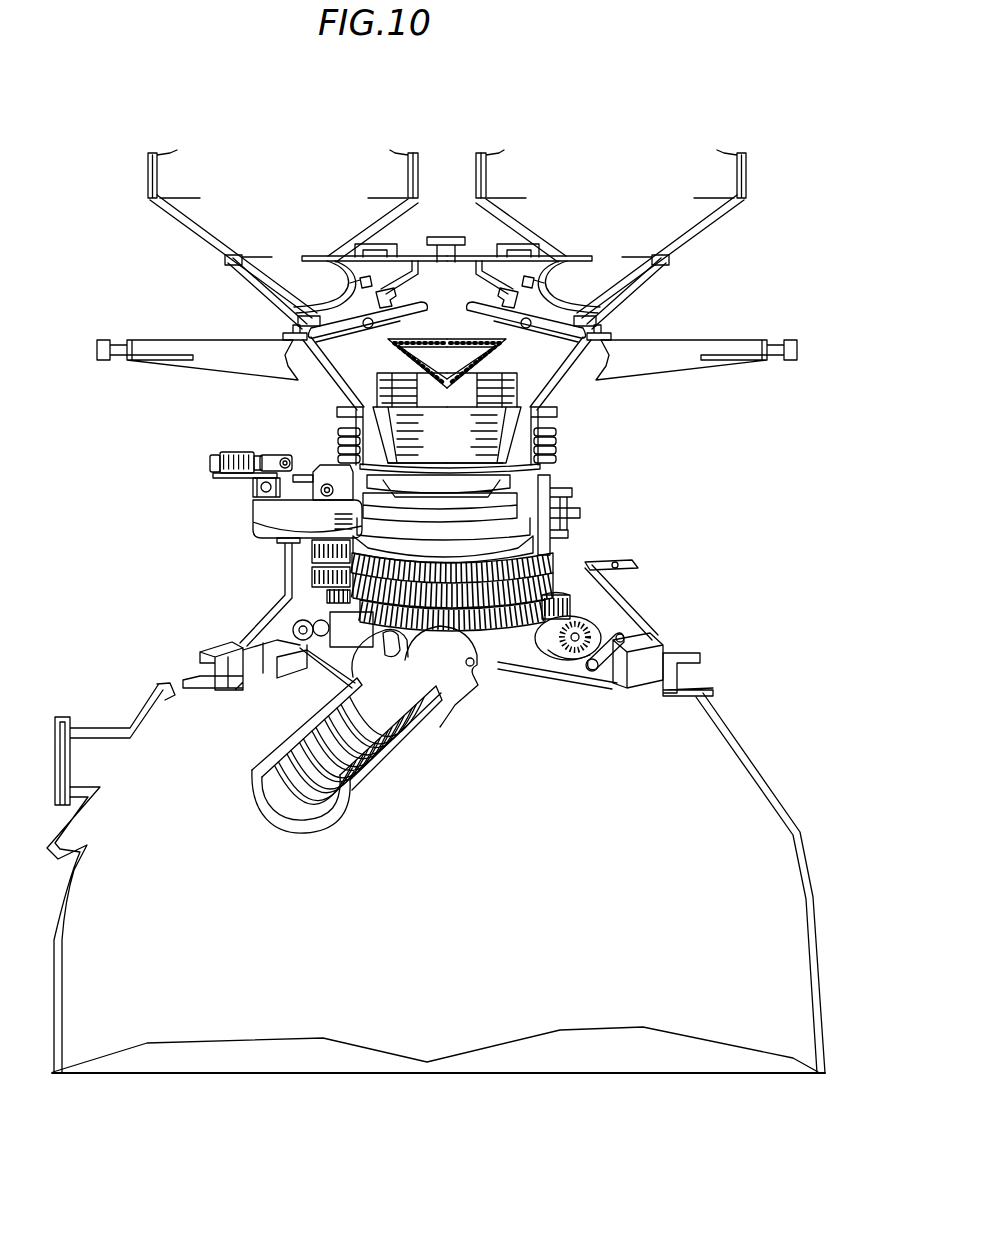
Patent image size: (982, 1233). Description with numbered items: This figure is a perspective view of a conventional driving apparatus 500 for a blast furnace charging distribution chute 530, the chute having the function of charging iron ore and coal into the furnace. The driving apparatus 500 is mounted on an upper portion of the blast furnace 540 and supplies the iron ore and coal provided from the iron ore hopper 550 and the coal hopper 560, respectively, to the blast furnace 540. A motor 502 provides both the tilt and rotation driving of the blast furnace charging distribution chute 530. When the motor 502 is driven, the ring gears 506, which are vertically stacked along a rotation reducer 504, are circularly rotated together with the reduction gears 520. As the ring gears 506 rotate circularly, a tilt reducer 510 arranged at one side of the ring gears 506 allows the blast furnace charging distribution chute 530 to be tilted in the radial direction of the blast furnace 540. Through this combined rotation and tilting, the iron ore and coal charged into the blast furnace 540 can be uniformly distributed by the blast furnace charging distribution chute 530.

The driving apparatus 500 is at (223, 448).
The motor 502 is at (232, 436).
The rotation reducer 504 is at (257, 516).
The ring gears 506 is at (557, 560).
The tilt reducer 510 is at (628, 614).
The reduction gears 520 is at (270, 561).
The blast furnace charging distribution chute 530 is at (383, 770).
The blast furnace 540 is at (747, 748).
The iron ore hopper 550 is at (148, 173).
The coal hopper 560 is at (746, 173).